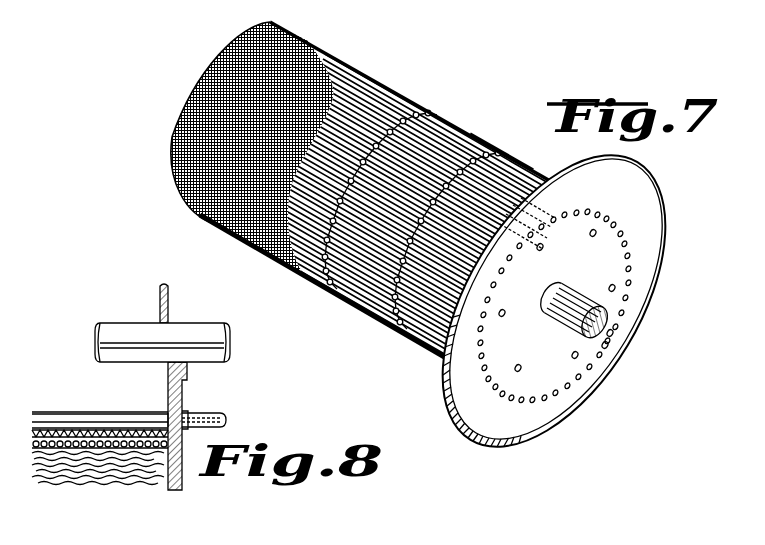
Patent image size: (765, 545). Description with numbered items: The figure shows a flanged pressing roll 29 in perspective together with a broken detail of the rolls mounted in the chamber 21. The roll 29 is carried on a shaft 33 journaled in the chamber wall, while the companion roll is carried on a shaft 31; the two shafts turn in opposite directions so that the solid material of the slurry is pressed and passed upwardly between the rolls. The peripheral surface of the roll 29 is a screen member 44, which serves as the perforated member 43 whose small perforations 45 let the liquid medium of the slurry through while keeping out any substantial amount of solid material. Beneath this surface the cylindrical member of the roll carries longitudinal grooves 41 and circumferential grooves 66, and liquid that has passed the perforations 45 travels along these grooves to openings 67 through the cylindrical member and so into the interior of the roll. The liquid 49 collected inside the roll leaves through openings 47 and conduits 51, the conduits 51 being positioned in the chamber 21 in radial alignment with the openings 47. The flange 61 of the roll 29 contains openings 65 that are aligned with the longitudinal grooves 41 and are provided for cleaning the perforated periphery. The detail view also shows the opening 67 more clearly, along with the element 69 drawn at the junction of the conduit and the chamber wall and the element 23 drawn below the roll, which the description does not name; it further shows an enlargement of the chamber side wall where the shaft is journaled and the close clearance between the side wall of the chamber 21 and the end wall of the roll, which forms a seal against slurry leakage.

In FIG. 7, the screen member 44 is at (340, 57).
In FIG. 7, the pressing roll 29 is at (413, 99).
In FIG. 7, the longitudinal grooves 41 is at (393, 206).
In FIG. 8, the longitudinal grooves 41 is at (53, 436).
In FIG. 7, the circumferential grooves 66 is at (493, 147).
In FIG. 7, the openings 67 is at (358, 298).
In FIG. 8, the openings 67 is at (135, 432).
In FIG. 7, the flange 61 is at (654, 243).
In FIG. 7, the openings 65 is at (595, 207).
In FIG. 7, the openings 47 is at (591, 237).
In FIG. 8, the openings 47 is at (166, 418).
In FIG. 7, the shaft 33 is at (557, 292).
In FIG. 8, the chamber 21 is at (184, 404).
In FIG. 8, the shaft 31 is at (200, 332).
In FIG. 8, the conduits 51 is at (212, 416).
In FIG. 8, the fitting 69 is at (188, 427).
In FIG. 8, the liquid 49 is at (60, 423).
In FIG. 8, the perforations 45 is at (108, 447).
In FIG. 8, the perforated member 43 is at (70, 448).
In FIG. 8, the liquid 23 is at (145, 477).